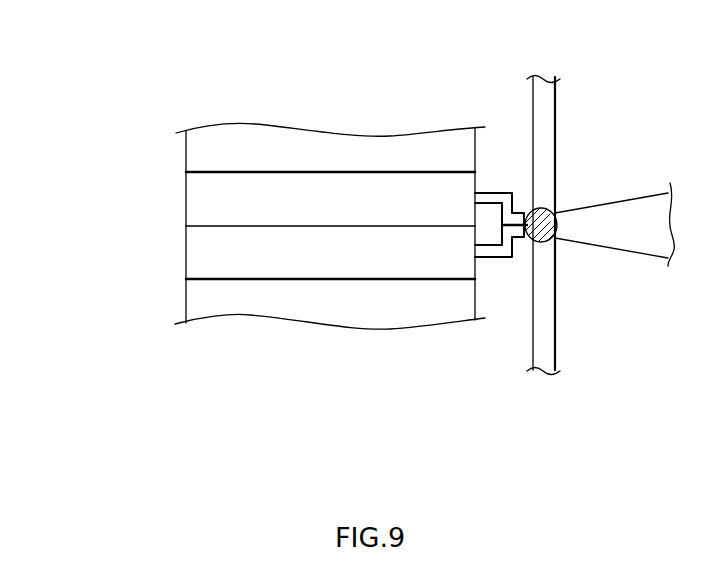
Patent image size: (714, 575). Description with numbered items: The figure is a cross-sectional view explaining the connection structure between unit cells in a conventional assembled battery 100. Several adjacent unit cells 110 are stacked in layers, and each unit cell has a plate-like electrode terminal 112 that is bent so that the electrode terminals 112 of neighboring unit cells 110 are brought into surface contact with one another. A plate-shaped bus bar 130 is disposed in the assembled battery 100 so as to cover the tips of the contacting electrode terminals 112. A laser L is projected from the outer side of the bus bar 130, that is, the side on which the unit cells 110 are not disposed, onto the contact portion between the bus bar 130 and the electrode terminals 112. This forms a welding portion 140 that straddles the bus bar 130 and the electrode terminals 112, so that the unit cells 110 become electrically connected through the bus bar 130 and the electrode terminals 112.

The assembled battery 100 is at (78, 47).
The unit cell 110 is at (190, 154).
The electrode terminal 112 is at (503, 193).
The bus bar 130 is at (555, 102).
The welding portion 140 is at (555, 243).
The laser L is at (614, 210).